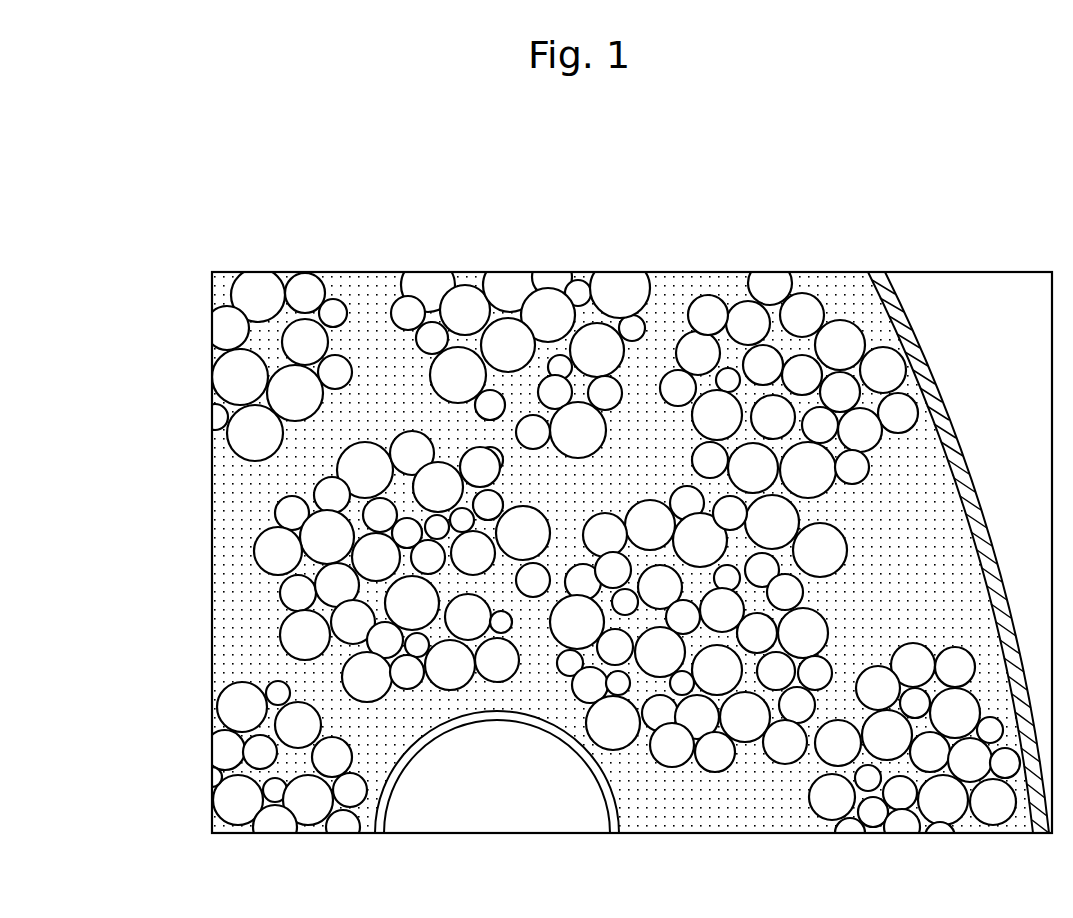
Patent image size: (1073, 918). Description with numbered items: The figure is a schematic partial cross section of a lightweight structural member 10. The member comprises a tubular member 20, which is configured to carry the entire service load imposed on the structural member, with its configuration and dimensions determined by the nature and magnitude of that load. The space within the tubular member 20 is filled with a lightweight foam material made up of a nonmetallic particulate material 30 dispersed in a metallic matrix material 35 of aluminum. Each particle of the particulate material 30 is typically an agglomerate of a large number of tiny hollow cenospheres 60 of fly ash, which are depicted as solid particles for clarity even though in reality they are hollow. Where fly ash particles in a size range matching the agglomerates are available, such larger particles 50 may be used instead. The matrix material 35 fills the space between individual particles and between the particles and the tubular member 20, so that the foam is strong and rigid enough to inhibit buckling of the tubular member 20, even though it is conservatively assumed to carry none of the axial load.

The lightweight structural member 10 is at (338, 256).
The tubular member 20 is at (920, 334).
The nonmetallic particulate material 30 is at (477, 266).
The metallic matrix material 35 is at (253, 497).
The larger particles 50 is at (603, 808).
The cenospheres 60 is at (688, 297).